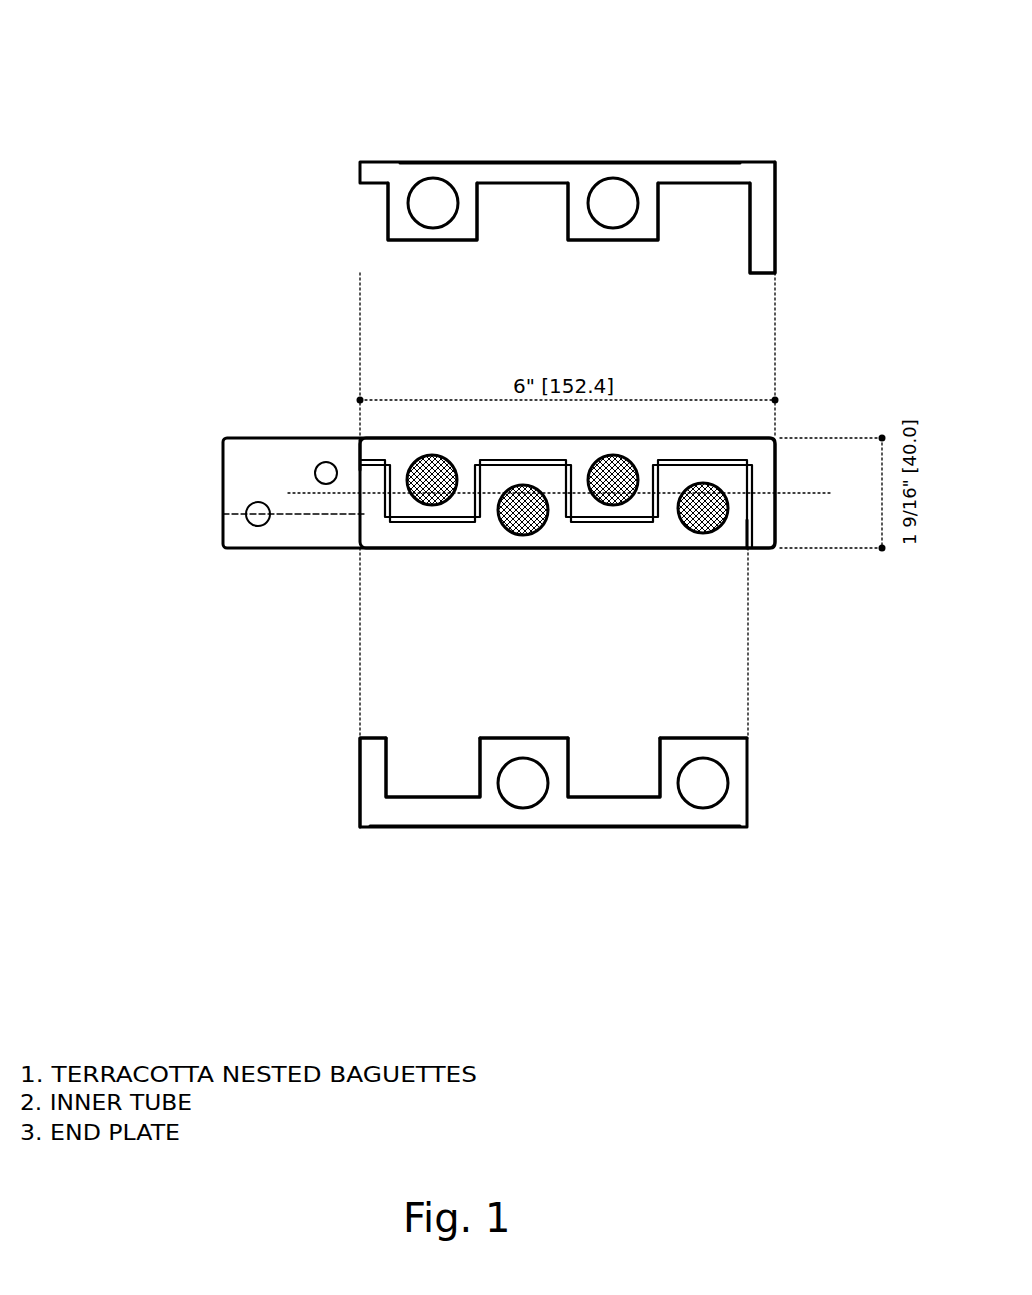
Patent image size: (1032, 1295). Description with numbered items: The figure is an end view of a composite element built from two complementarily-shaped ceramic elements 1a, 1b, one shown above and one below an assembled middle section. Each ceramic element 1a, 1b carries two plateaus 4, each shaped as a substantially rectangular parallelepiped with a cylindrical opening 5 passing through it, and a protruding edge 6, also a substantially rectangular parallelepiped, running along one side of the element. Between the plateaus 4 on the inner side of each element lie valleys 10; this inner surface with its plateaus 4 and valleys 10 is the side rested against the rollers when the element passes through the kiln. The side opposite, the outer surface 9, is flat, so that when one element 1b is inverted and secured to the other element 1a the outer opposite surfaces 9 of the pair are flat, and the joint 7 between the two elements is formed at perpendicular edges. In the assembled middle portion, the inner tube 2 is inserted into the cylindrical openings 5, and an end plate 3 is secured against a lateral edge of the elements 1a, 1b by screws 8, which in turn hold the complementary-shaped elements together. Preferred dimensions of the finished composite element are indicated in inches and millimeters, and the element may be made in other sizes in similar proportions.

The ceramic element 1a is at (360, 810).
The ceramic element 1b is at (388, 200).
The inner tube 2 is at (223, 514).
The end plate 3 is at (223, 461).
The plateau 4 is at (514, 738).
The cylindrical opening 5 is at (428, 205).
The protruding edge 6 is at (776, 240).
The joint 7 is at (352, 460).
The screw 8 is at (430, 470).
The outer surface 9 is at (548, 160).
The valley 10 is at (507, 187).